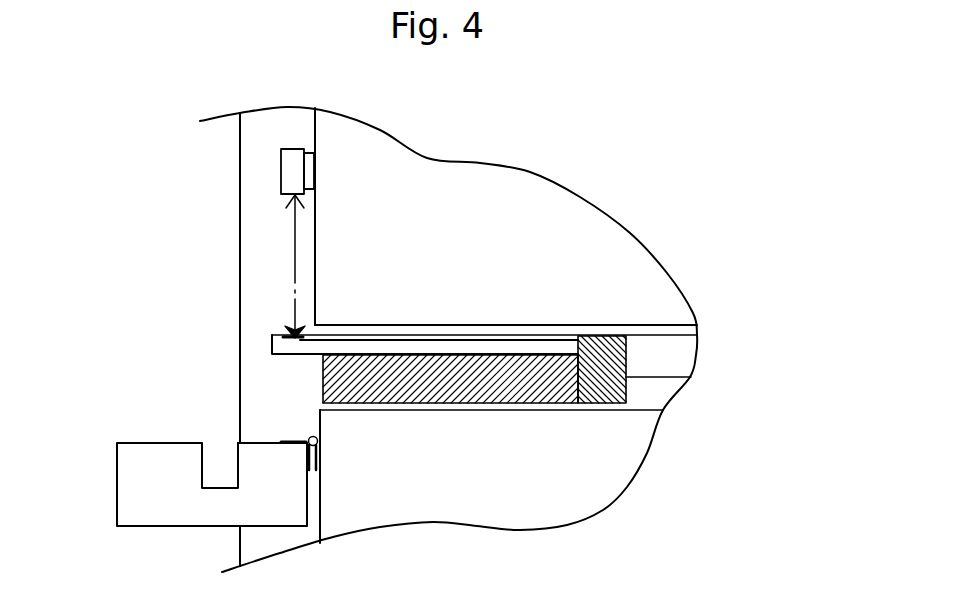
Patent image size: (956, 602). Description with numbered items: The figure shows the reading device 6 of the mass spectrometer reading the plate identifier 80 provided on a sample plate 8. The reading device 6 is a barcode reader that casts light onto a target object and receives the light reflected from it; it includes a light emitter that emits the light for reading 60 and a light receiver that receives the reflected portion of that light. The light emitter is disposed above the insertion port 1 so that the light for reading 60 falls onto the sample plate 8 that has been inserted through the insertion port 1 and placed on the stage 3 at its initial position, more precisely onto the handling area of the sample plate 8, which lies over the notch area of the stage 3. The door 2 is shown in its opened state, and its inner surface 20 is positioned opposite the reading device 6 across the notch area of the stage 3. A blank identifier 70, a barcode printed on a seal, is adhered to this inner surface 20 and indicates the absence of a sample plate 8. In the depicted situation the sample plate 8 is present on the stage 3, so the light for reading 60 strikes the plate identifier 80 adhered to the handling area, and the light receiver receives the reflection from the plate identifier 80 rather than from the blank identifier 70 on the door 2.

The insertion port 1 is at (265, 362).
The door 2 is at (115, 493).
The stage 3 is at (523, 337).
The reading device 6 is at (280, 168).
The sample plate 8 is at (412, 340).
The inner surface 20 is at (260, 432).
The light for reading 60 is at (292, 242).
The blank identifier 70 is at (290, 438).
The plate identifier 80 is at (283, 335).